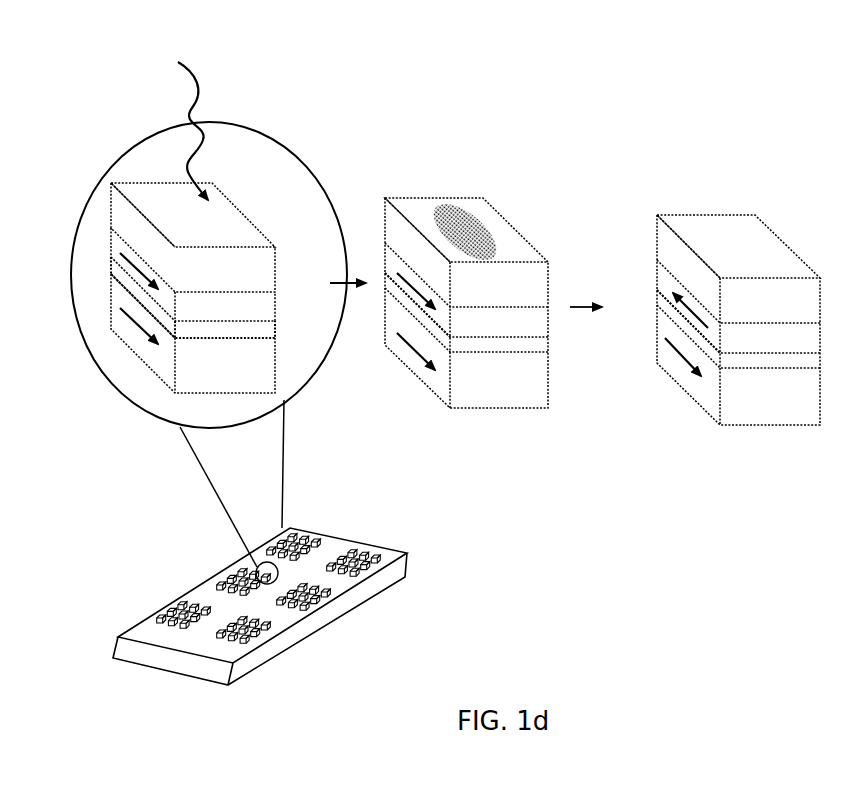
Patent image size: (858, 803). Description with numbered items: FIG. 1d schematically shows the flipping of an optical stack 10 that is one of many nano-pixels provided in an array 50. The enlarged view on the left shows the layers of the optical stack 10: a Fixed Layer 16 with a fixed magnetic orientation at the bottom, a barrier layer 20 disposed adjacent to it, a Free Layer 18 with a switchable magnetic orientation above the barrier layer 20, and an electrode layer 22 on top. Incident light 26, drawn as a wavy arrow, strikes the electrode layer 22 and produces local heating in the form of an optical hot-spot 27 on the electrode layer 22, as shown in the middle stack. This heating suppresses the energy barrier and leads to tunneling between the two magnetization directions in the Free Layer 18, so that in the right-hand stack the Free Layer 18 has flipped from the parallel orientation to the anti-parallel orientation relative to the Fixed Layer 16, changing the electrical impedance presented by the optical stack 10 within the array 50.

The optical stack 10 is at (122, 114).
The Fixed Layer 16 is at (275, 358).
The Free Layer 18 is at (275, 300).
The barrier layer 20 is at (122, 275).
The electrode layer 22 is at (255, 227).
The incident light 26 is at (182, 118).
The optical hot-spot 27 is at (483, 223).
The array of nano-pixels 50 is at (164, 571).